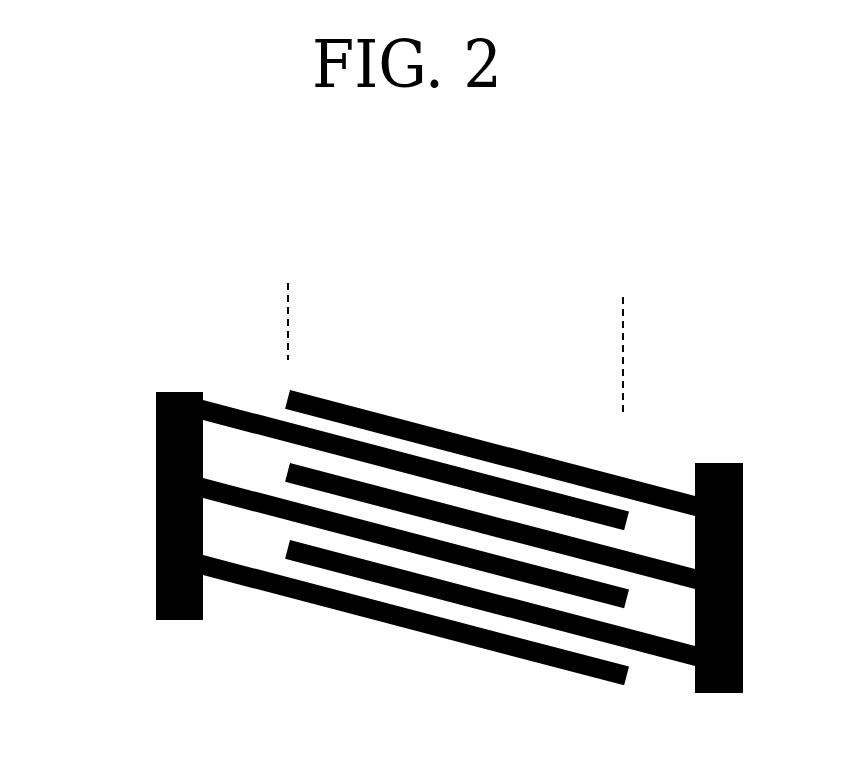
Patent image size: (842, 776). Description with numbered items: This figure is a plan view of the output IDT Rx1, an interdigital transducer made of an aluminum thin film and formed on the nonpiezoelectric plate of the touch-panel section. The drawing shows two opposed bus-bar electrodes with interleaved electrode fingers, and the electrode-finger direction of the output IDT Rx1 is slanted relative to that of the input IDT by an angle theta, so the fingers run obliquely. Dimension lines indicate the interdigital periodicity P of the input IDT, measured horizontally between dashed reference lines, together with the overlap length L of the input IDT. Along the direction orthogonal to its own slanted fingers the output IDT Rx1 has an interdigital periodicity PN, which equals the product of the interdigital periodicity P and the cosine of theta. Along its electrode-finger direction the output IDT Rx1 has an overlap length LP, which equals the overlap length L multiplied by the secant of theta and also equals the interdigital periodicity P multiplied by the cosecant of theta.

The output IDT Rx1 is at (156, 588).
The interdigital periodicity P is at (637, 319).
The interdigital periodicity PN is at (108, 406).
The overlap length L is at (304, 315).
The overlap length LP is at (304, 320).